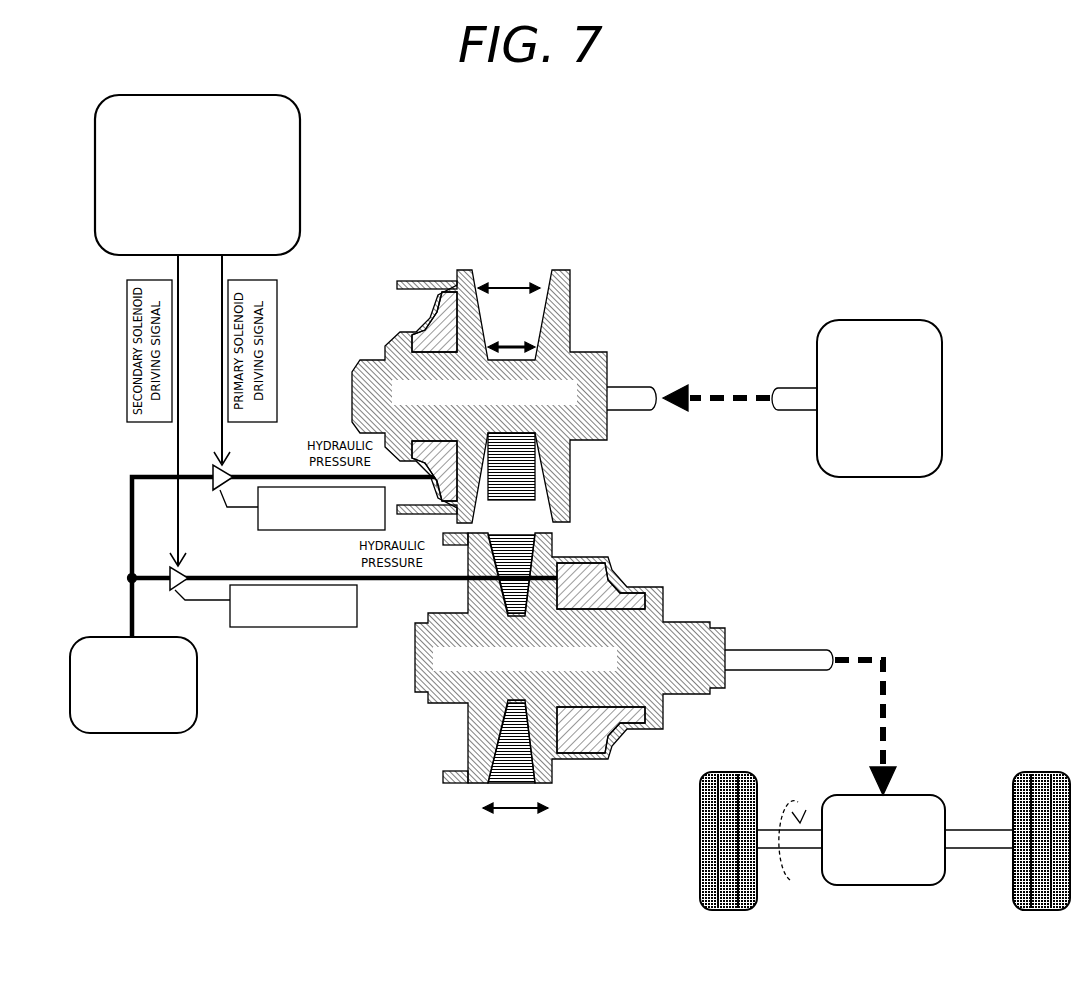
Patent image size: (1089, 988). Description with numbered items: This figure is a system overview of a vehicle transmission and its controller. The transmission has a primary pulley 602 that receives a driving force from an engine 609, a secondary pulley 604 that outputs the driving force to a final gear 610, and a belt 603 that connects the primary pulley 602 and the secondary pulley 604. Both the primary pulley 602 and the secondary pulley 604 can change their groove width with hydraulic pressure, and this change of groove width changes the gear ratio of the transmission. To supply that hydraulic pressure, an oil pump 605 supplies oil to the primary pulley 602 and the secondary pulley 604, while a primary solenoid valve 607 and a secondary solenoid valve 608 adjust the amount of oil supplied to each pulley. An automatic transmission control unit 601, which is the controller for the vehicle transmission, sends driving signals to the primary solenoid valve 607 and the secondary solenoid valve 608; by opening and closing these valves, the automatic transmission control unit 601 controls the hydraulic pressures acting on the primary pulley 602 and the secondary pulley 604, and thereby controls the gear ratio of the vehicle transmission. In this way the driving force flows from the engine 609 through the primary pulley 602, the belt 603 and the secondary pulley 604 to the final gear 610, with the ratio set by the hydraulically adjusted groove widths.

The automatic transmission control unit (ATCU) 601 is at (280, 137).
The primary pulley 602 is at (570, 305).
The belt 603 is at (573, 483).
The secondary pulley 604 is at (548, 545).
The oil pump 605 is at (188, 676).
The primary solenoid valve 607 is at (232, 468).
The secondary solenoid valve 608 is at (190, 560).
The engine 609 is at (923, 340).
The final gear 610 is at (912, 805).